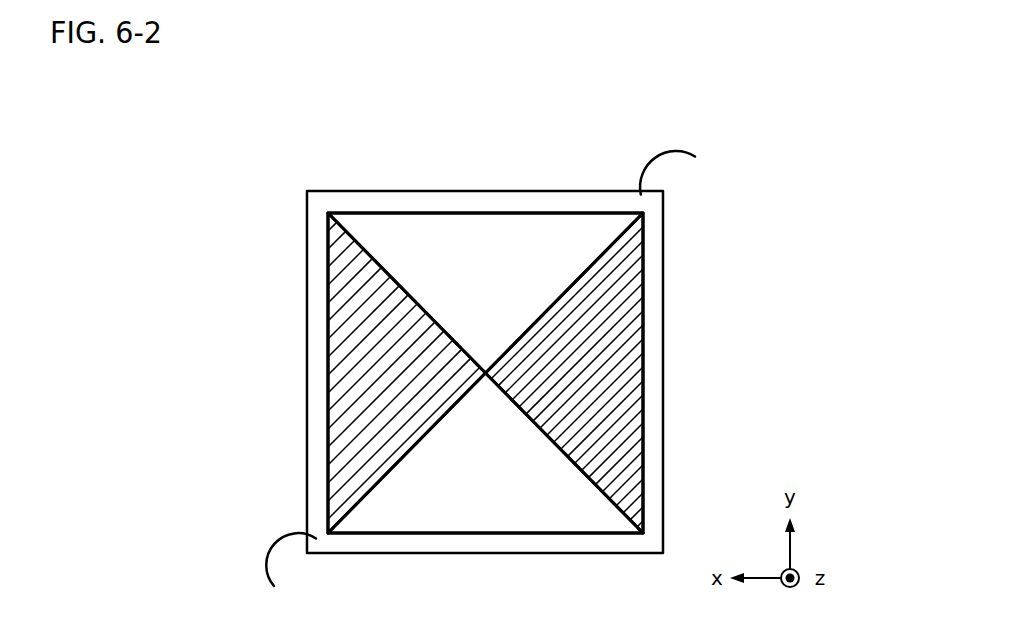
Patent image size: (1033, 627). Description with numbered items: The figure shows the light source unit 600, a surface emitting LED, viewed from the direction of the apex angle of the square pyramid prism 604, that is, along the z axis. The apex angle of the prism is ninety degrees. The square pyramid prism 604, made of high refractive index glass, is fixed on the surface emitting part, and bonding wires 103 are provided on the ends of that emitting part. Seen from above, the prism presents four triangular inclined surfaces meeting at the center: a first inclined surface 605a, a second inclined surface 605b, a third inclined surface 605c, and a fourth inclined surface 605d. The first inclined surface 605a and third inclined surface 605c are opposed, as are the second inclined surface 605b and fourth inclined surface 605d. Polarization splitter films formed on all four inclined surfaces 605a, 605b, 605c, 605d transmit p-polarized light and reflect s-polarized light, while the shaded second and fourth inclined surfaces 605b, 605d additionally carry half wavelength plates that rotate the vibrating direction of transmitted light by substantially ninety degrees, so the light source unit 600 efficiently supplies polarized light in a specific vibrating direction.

The light source unit 600 is at (527, 134).
The bonding wires 103 is at (660, 152).
The square pyramid prism 604 is at (643, 423).
The first inclined surface 605a is at (470, 238).
The second inclined surface 605b is at (348, 390).
The third inclined surface 605c is at (473, 500).
The fourth inclined surface 605d is at (620, 355).